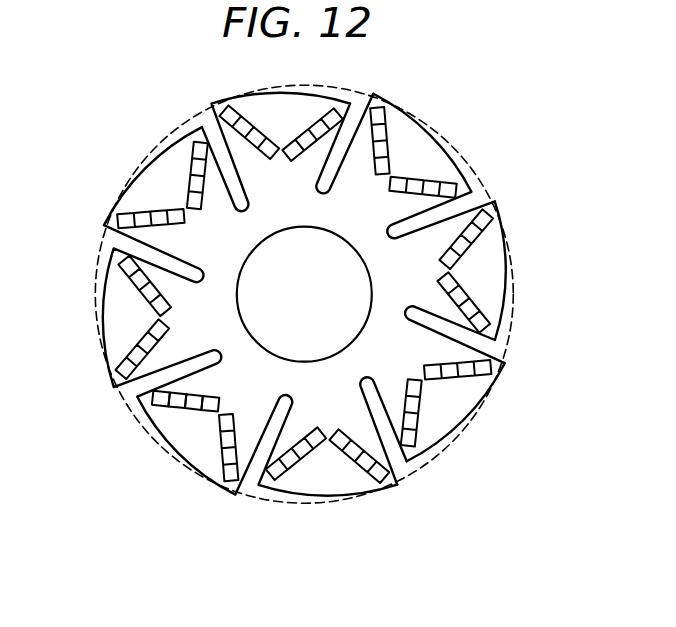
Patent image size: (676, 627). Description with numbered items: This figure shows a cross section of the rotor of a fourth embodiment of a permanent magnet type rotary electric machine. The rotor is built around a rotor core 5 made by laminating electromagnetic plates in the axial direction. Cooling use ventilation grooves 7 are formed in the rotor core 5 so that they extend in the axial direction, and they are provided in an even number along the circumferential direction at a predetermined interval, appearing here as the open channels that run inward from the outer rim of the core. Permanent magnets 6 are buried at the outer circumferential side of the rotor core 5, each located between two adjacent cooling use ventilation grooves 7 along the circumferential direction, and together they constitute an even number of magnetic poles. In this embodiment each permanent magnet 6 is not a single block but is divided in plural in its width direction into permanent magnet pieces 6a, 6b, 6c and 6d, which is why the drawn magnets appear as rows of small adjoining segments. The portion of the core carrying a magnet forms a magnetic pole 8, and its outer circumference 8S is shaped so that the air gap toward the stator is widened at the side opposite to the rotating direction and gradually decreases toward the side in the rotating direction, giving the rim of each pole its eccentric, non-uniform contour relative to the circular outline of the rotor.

The rotor core 5 is at (410, 363).
The permanent magnet 6 is at (121, 480).
The permanent magnet piece 6a is at (163, 402).
The permanent magnet piece 6b is at (181, 406).
The permanent magnet piece 6c is at (200, 408).
The permanent magnet piece 6d is at (183, 466).
The cooling use ventilation groove 7 is at (393, 466).
The magnetic pole 8 is at (328, 465).
The outer circumference 8S is at (380, 484).